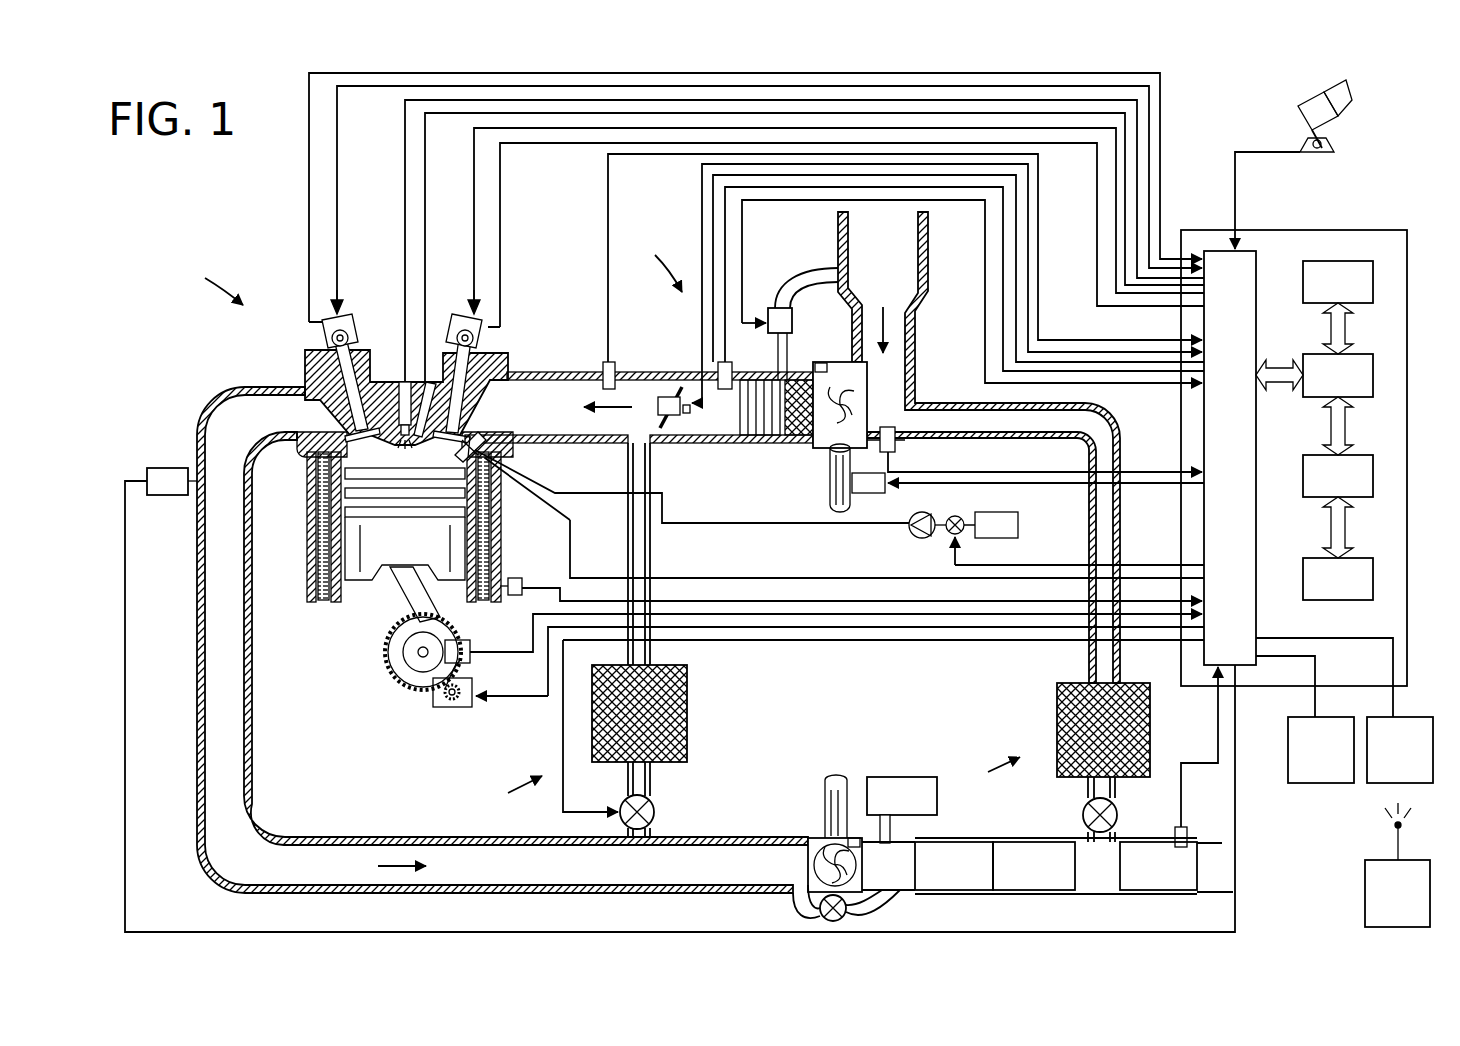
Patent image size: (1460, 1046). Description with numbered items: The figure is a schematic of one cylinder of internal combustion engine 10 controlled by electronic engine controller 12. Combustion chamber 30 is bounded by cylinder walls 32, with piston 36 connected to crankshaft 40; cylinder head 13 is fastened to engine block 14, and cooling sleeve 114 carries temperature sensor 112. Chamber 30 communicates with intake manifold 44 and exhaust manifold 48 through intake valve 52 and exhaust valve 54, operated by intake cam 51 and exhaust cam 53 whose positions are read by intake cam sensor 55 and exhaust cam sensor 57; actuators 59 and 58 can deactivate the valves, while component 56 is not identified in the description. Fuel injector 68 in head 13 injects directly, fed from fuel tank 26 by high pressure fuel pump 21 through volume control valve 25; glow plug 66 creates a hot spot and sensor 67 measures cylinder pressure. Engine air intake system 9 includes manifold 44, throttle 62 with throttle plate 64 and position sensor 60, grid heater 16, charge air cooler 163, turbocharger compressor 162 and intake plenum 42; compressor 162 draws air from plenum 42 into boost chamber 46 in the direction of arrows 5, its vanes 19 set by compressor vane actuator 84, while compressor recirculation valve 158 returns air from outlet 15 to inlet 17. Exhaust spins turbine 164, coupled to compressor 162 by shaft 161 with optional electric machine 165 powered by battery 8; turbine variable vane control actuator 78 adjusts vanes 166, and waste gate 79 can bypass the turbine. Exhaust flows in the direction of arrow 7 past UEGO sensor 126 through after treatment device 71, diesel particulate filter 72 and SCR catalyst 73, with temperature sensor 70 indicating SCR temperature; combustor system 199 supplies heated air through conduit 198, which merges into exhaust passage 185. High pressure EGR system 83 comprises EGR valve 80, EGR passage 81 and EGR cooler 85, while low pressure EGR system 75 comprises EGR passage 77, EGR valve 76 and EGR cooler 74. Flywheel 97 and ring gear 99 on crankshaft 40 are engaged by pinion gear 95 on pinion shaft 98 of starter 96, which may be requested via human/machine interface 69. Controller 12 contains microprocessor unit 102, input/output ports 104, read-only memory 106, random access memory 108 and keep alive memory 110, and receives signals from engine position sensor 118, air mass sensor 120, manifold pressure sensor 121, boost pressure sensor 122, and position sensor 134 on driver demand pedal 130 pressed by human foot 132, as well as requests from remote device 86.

The arrows 5 is at (628, 372).
The arrow 7 is at (440, 837).
The battery 8 is at (1344, 710).
The engine air intake system 9 is at (656, 263).
The internal combustion engine 10 is at (206, 280).
The electronic engine controller 12 is at (1372, 228).
The cylinder head 13 is at (500, 362).
The engine block 14 is at (305, 457).
The compressor outlet 15 is at (792, 345).
The grid heater 16 is at (752, 436).
The compressor inlet 17 is at (867, 386).
The compressor vanes 19 is at (850, 402).
The high pressure fuel pump 21 is at (930, 513).
The fuel pump volume control valve 25 is at (949, 532).
The fuel tank 26 is at (996, 524).
The combustion chamber 30 is at (318, 556).
The cylinder walls 32 is at (340, 604).
The piston 36 is at (385, 585).
The crankshaft 40 is at (410, 683).
The intake plenum 42 is at (979, 447).
The intake manifold 44 is at (660, 396).
The intake boost chamber 46 is at (639, 419).
The exhaust manifold 48 is at (502, 640).
The intake cam 51 is at (478, 318).
The intake valve 52 is at (450, 420).
The exhaust cam 53 is at (345, 320).
The exhaust valve 54 is at (356, 425).
The intake cam sensor 55 is at (474, 343).
The exhaust valve stem 56 is at (452, 390).
The exhaust cam sensor 57 is at (325, 330).
The variable valve activating/deactivating actuator 58 is at (352, 338).
The variable valve activating/deactivating actuator 59 is at (458, 330).
The throttle position sensor 60 is at (690, 414).
The electronic throttle 62 is at (668, 386).
The throttle plate 64 is at (674, 396).
The glow plug 66 is at (403, 386).
The pressure sensor 67 is at (426, 385).
The fuel injector 68 is at (498, 466).
The human/machine interface 69 is at (1305, 719).
The temperature sensor 70 is at (1184, 827).
The after treatment device 71 is at (954, 866).
The diesel particulate filter 72 is at (1034, 866).
The selective catalytic reduction catalyst 73 is at (1158, 866).
The EGR cooler 74 is at (1150, 730).
The low pressure EGR system 75 is at (986, 770).
The EGR valve 76 is at (1117, 810).
The EGR passage 77 is at (1089, 510).
The turbine variable vane control actuator 78 is at (852, 838).
The waste gate 79 is at (820, 914).
The EGR valve 80 is at (620, 806).
The EGR passage 81 is at (628, 470).
The high pressure EGR system 83 is at (508, 791).
The compressor vane actuator 84 is at (822, 360).
The EGR cooler 85 is at (688, 706).
The remote device 86 is at (1397, 865).
The pinion gear 95 is at (455, 701).
The starter 96 is at (472, 700).
The flywheel 97 is at (400, 660).
The pinion shaft 98 is at (445, 700).
The ring gear 99 is at (420, 692).
The microprocessor unit 102 is at (1373, 368).
The input/output ports 104 is at (1258, 260).
The read-only memory 106 is at (1373, 278).
The random access memory 108 is at (1373, 468).
The keep alive memory 110 is at (1373, 568).
The temperature sensor 112 is at (530, 572).
The cooling sleeve 114 is at (318, 512).
The engine position sensor 118 is at (470, 645).
The air mass sensor 120 is at (895, 445).
The pressure sensor 121 is at (604, 368).
The pressure sensor 122 is at (745, 360).
The universal exhaust gas oxygen sensor 126 is at (147, 472).
The driver demand pedal 130 is at (1300, 118).
The human foot 132 is at (1352, 96).
The position sensor 134 is at (1334, 150).
The compressor recirculation valve 158 is at (775, 306).
The shaft 161 is at (830, 500).
The turbocharger compressor 162 is at (830, 455).
The charge air cooler 163 is at (798, 436).
The turbine 164 is at (808, 842).
The electric machine 165 is at (866, 493).
The variable geometry turbine vanes 166 is at (857, 866).
The exhaust passage 185 is at (915, 892).
The passage 198 is at (892, 822).
The combustor system 199 is at (902, 796).